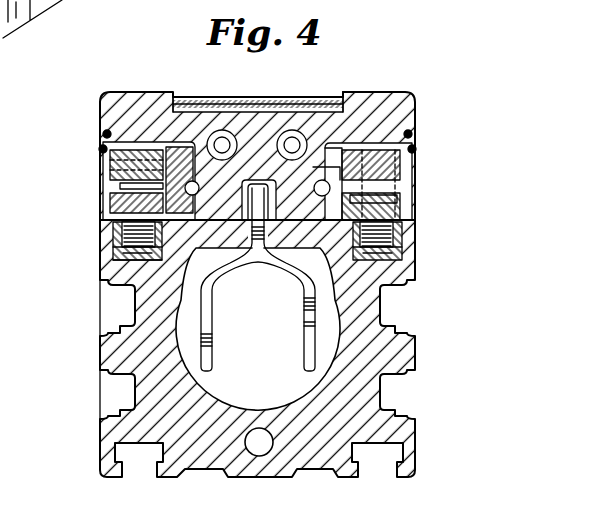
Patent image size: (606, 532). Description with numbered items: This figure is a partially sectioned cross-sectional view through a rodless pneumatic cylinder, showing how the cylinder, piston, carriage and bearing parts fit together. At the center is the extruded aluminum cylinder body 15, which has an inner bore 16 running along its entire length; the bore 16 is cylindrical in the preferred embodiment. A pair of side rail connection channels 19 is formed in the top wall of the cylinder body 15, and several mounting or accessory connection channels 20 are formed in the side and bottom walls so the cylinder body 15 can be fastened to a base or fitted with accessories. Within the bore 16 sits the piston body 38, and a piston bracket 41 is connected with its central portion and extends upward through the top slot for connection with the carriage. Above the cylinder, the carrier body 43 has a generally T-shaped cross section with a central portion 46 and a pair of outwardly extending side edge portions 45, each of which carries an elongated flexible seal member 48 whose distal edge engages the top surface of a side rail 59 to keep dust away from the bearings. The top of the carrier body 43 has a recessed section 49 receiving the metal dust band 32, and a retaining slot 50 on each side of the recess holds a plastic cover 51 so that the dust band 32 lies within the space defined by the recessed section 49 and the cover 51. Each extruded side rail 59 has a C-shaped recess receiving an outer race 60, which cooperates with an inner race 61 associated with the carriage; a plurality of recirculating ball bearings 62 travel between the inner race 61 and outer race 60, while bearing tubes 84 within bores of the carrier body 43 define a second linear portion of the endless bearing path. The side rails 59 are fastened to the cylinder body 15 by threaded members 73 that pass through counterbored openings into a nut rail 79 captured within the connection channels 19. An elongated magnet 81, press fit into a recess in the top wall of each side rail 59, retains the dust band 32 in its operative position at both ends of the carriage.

The cylinder body 15 is at (357, 390).
The inner bore 16 is at (278, 395).
The side rail connection channels 19 is at (130, 258).
The mounting or accessory connection channels 20 is at (127, 312).
The dust band 32 is at (323, 141).
The piston body 38 is at (250, 322).
The piston bracket 41 is at (400, 268).
The carrier body 43 is at (356, 92).
The side edge portions 45 is at (130, 107).
The central portion 46 is at (414, 183).
The flexible seal member 48 is at (418, 142).
The recessed section 49 is at (339, 97).
The retaining slot 50 is at (176, 98).
The plastic cover 51 is at (267, 101).
The side rail 59 is at (112, 165).
The outer race 60 is at (104, 168).
The inner race 61 is at (281, 136).
The recirculating ball bearings 62 is at (222, 130).
The threaded member 73 is at (185, 209).
The nut rail 79 is at (120, 240).
The magnet 81 is at (414, 119).
The bearing tube 84 is at (365, 120).